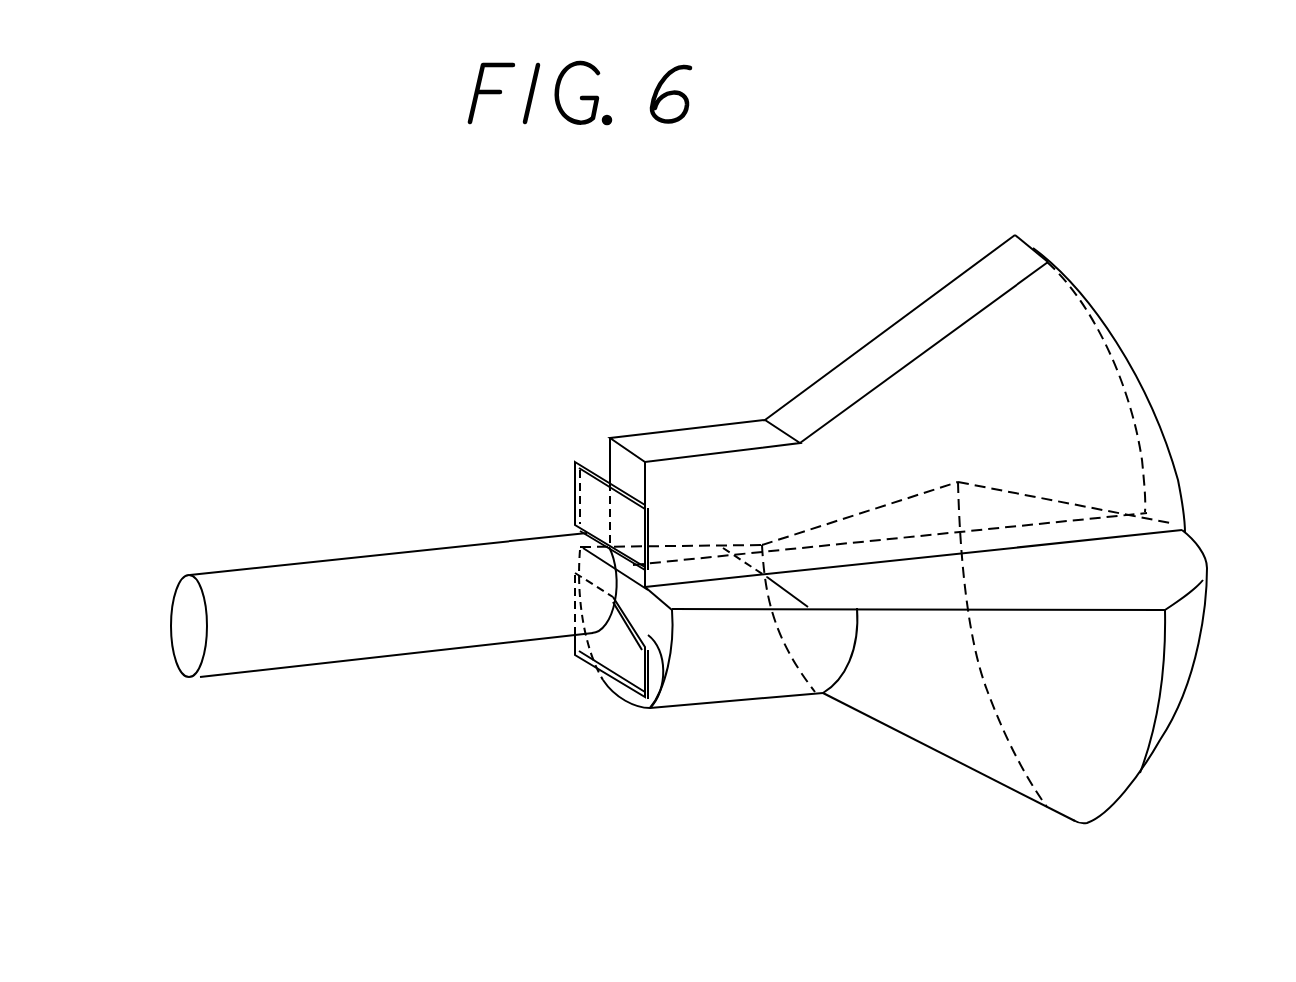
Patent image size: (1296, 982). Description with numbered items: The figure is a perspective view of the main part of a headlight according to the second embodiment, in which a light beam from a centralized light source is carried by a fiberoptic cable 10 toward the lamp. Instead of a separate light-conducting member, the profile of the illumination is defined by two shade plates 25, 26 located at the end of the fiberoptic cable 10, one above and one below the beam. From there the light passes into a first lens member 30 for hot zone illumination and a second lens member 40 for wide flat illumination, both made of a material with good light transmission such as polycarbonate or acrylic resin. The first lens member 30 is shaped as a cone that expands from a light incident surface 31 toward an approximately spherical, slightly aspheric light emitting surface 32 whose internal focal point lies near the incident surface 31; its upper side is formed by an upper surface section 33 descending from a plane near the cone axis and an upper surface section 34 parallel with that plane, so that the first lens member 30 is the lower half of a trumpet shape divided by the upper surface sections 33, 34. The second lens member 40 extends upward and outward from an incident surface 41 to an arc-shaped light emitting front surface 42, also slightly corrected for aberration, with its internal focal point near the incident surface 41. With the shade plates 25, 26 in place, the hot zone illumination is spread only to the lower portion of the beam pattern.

The fiberoptic cable 10 is at (360, 618).
The shade plate 25 is at (632, 652).
The shade plate 26 is at (598, 490).
The first lens member 30 is at (892, 682).
The light incident surface 31 is at (648, 700).
The light emitting surface 32 is at (1183, 647).
The upper surface section 33 is at (705, 597).
The upper surface section 34 is at (1165, 558).
The second lens member 40 is at (850, 373).
The incident surface 41 is at (628, 472).
The light emitting front surface 42 is at (1122, 327).